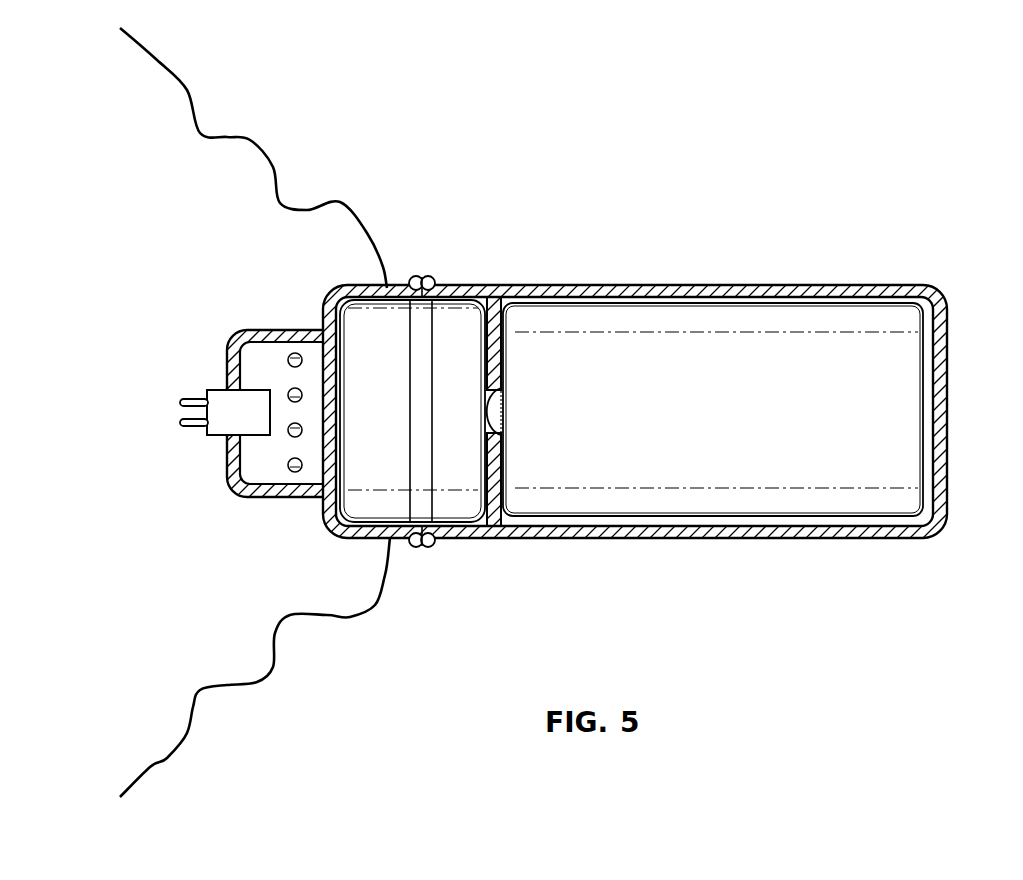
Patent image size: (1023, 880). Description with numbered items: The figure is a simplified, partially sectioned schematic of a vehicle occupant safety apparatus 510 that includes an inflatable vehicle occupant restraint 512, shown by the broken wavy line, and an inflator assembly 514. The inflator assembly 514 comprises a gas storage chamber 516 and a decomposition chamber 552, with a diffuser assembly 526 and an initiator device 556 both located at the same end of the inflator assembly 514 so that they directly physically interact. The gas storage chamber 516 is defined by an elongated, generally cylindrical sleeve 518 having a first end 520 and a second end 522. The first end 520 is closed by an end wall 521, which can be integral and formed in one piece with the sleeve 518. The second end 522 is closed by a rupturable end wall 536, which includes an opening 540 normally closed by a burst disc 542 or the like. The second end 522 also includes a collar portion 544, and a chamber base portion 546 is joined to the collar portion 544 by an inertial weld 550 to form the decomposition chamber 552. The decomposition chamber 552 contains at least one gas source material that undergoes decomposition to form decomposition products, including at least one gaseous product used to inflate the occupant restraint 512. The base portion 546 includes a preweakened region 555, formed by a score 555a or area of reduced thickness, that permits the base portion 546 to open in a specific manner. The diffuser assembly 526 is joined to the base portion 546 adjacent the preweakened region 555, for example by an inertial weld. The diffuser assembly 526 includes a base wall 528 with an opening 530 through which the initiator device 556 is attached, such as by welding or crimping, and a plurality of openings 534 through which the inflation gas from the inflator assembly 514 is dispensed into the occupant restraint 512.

The vehicle occupant safety apparatus 510 is at (745, 162).
The inflatable vehicle occupant restraint 512 is at (243, 134).
The inflator assembly 514 is at (823, 316).
The gas storage chamber 516 is at (740, 512).
The sleeve 518 is at (560, 533).
The first end 520 is at (924, 553).
The end wall 521 is at (945, 383).
The second end 522 is at (496, 271).
The diffuser assembly 526 is at (243, 335).
The base wall 528 is at (228, 460).
The opening 530 is at (229, 382).
The openings 534 is at (294, 438).
The rupturable end wall 536 is at (500, 472).
The opening 540 is at (484, 388).
The burst disc 542 is at (495, 411).
The collar portion 544 is at (455, 538).
The chamber base portion 546 is at (358, 290).
The inertial weld 550 is at (425, 252).
The decomposition chamber 552 is at (458, 296).
The preweakened region 555 is at (337, 410).
The score 555a is at (337, 427).
The initiator device 556 is at (216, 424).